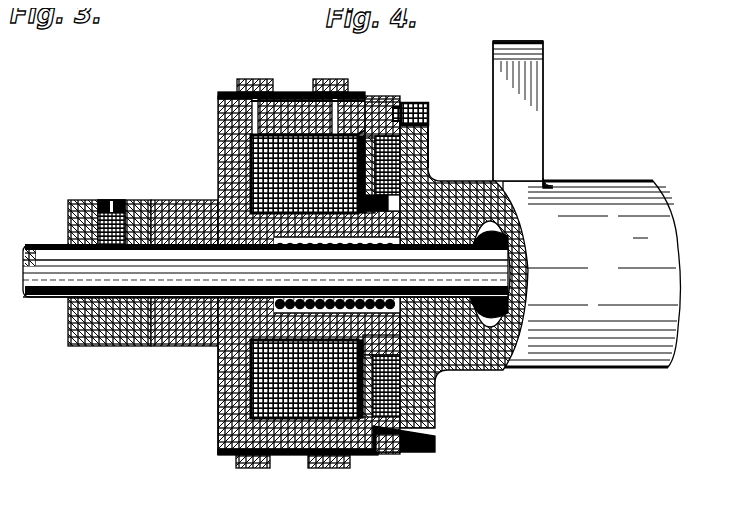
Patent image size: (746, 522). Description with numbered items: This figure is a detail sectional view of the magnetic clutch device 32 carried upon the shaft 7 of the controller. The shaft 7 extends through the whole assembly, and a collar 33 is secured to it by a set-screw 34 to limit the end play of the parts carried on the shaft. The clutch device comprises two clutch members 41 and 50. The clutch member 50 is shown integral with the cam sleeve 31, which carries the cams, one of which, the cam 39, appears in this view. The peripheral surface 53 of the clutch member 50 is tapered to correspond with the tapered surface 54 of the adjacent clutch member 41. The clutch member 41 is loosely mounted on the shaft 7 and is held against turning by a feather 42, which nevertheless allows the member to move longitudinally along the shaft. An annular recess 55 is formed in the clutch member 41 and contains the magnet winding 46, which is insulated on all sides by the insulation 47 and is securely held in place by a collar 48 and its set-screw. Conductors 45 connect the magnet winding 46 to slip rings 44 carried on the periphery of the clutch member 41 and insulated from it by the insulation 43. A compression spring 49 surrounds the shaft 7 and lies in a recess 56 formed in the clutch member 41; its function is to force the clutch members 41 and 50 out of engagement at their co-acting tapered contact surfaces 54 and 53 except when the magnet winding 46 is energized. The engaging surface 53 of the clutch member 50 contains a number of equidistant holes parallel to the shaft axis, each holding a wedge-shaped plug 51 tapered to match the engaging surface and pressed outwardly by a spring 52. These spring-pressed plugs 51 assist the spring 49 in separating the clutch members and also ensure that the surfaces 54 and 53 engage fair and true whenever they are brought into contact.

The shaft 7 is at (63, 268).
The sleeve 31 is at (598, 190).
The magnetic clutch device 32 is at (207, 80).
The collar 33 is at (140, 192).
The set-screw 34 is at (103, 192).
The cam 39 is at (527, 113).
The clutch member 41 is at (225, 120).
The feather 42 is at (168, 235).
The insulation 43 is at (283, 83).
The slip rings 44 is at (234, 71).
The conductors 45 is at (248, 105).
The magnet winding 46 is at (397, 93).
The insulation 47 is at (240, 150).
The collar 48 is at (423, 158).
The compression spring 49 is at (212, 340).
The clutch member 50 is at (380, 150).
The wedge-shaped plug 51 is at (420, 93).
The spring 52 is at (421, 123).
The peripheral surface 53 is at (420, 410).
The tapered surface 54 is at (365, 447).
The annular recess 55 is at (365, 178).
The recess 56 is at (215, 362).